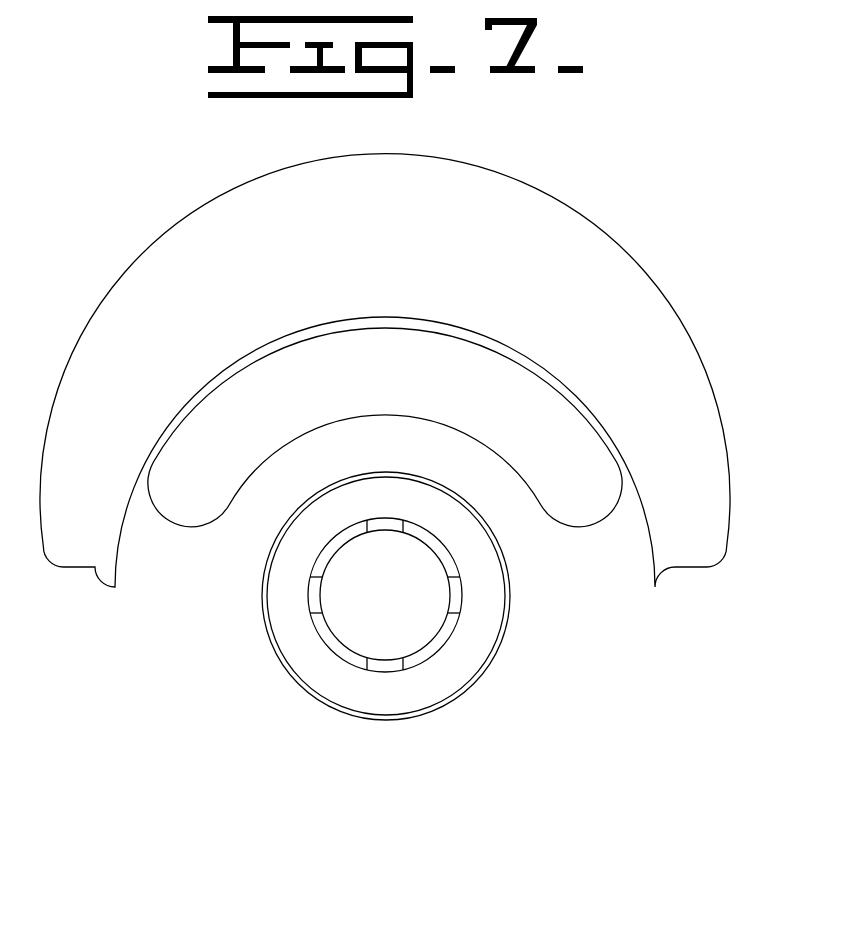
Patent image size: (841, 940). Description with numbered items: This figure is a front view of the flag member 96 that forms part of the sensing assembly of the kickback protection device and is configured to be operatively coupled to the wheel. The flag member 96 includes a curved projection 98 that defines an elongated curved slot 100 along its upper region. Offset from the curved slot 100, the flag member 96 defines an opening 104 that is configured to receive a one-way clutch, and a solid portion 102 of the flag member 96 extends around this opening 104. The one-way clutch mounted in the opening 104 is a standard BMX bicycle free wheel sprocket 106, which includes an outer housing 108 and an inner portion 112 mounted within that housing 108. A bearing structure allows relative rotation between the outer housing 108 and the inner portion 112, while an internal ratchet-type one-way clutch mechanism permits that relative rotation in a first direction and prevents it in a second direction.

The flag member 96 is at (250, 840).
The curved projection 98 is at (555, 297).
The elongated curved slot 100 is at (513, 361).
The solid portion 102 is at (143, 607).
The opening 104 is at (512, 597).
The free wheel sprocket 106 is at (369, 740).
The outer housing 108 is at (453, 697).
The inner portion 112 is at (378, 660).